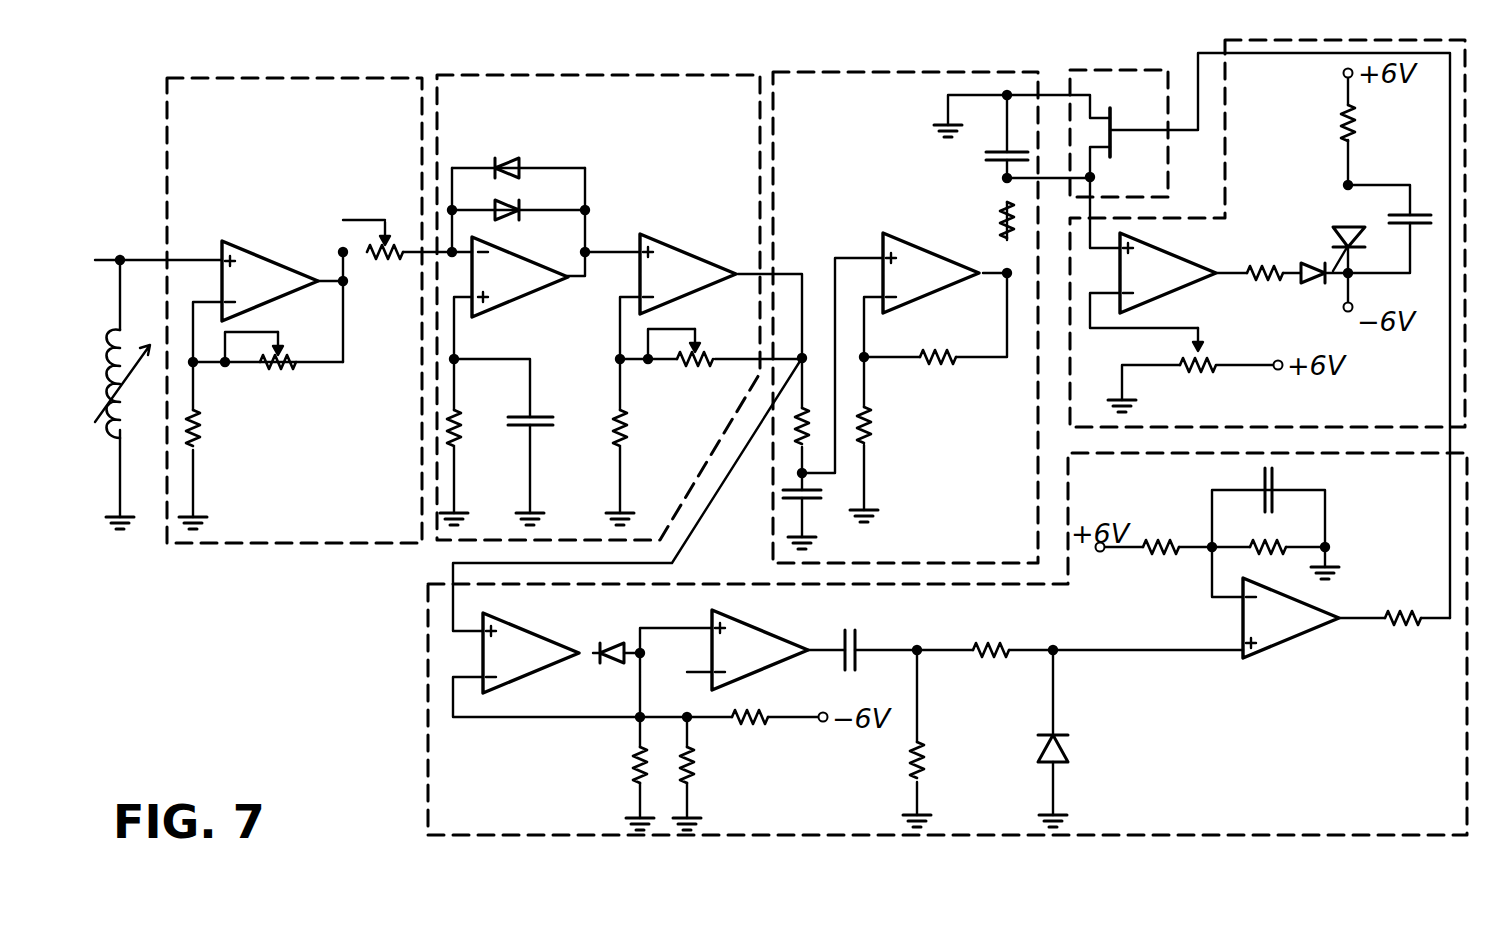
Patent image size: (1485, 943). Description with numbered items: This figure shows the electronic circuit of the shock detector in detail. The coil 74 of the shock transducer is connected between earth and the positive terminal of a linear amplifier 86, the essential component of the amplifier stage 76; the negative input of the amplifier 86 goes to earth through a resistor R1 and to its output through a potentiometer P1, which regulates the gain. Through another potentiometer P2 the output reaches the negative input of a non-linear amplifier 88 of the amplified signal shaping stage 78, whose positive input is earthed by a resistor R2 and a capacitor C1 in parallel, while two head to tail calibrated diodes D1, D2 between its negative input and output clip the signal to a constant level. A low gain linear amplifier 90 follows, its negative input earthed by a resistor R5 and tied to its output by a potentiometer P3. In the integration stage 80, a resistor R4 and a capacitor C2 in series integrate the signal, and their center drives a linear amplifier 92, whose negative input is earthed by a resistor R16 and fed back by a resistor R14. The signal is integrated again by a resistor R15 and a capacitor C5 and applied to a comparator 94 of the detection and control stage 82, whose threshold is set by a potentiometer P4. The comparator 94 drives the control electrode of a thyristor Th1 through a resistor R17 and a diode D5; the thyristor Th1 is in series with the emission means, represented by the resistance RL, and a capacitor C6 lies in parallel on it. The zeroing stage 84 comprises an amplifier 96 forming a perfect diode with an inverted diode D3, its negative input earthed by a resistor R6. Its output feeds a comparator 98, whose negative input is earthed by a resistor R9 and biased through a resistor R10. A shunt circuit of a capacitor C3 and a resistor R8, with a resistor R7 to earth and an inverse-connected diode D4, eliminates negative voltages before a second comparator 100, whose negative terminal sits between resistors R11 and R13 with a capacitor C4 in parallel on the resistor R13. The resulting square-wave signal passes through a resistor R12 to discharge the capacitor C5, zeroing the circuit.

The coil 74 is at (108, 430).
The amplifier stage 76 is at (167, 120).
The amplified signal shaping stage 78 is at (591, 73).
The integration stage 80 is at (896, 69).
The detection and control stage 82 is at (1225, 40).
The zeroing stage 84 is at (1110, 68).
The linear amplifier 86 is at (264, 262).
The non-linear amplifier 88 is at (510, 290).
The low gain linear amplifier 90 is at (692, 254).
The linear amplifier 92 is at (888, 251).
The comparator 94 is at (1150, 273).
The amplifier 96 is at (518, 677).
The comparator 98 is at (770, 650).
The second comparator 100 is at (1287, 652).
The potentiometer P1 is at (274, 372).
The potentiometer P2 is at (388, 264).
The potentiometer P3 is at (710, 362).
The potentiometer P4 is at (1204, 370).
The resistor R1 is at (200, 446).
The resistor R2 is at (458, 438).
The resistor R4 is at (796, 432).
The resistor R5 is at (622, 436).
The resistor R6 is at (637, 770).
The resistor R7 is at (920, 762).
The resistor R8 is at (995, 658).
The resistor R9 is at (690, 768).
The resistor R10 is at (772, 725).
The resistor R11 is at (1165, 552).
The resistor R12 is at (1404, 626).
The resistor R13 is at (1284, 542).
The resistor R14 is at (944, 358).
The resistor R15 is at (1000, 222).
The resistor R16 is at (868, 435).
The resistor R17 is at (1268, 277).
The resistance of the emission means RL is at (1338, 116).
The capacitor C1 is at (540, 428).
The capacitor C2 is at (790, 506).
The capacitor C3 is at (856, 632).
The capacitor C4 is at (1272, 490).
The capacitor C5 is at (983, 160).
The capacitor C6 is at (1417, 213).
The calibrated diode D1 is at (508, 158).
The calibrated diode D2 is at (523, 203).
The inverted diode D3 is at (610, 642).
The inverse-connected diode D4 is at (1060, 753).
The diode D5 is at (1310, 263).
The thyristor Th1 is at (1331, 227).